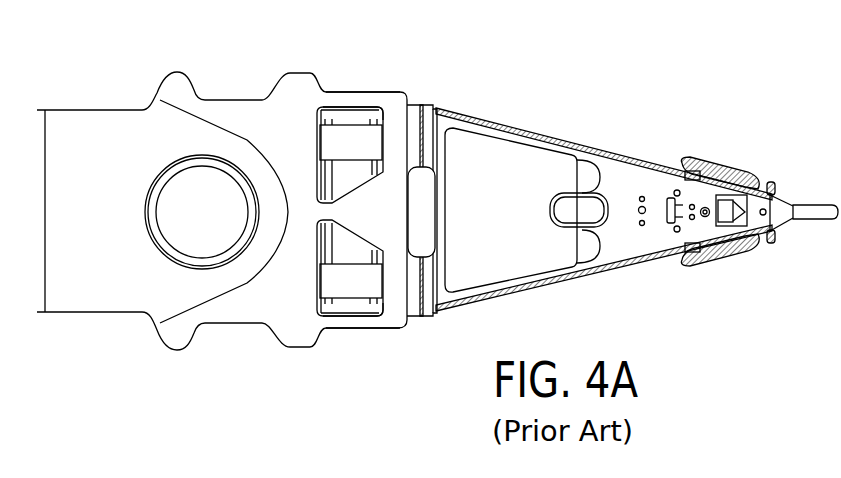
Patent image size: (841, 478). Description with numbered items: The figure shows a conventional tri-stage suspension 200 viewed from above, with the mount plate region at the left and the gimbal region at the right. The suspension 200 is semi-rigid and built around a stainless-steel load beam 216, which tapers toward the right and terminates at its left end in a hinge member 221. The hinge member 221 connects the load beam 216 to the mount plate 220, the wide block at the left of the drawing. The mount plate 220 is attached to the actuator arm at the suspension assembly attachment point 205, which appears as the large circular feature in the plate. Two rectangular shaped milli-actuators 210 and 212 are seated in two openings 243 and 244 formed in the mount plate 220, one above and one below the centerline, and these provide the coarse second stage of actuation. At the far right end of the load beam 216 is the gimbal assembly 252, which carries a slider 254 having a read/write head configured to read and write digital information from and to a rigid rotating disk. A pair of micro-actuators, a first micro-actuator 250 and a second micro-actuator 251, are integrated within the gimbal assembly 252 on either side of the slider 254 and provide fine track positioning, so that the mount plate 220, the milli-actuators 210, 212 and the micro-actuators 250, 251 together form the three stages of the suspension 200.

The tri-stage suspension 200 is at (637, 164).
The suspension assembly attachment point 205 is at (202, 212).
The milli-actuator 210 is at (348, 140).
The milli-actuator 212 is at (356, 284).
The load beam 216 is at (553, 133).
The mount plate 220 is at (246, 308).
The hinge member 221 is at (428, 298).
The opening 243 is at (334, 101).
The opening 244 is at (341, 309).
The first micro-actuator 250 is at (678, 187).
The second micro-actuator 251 is at (679, 233).
The gimbal assembly 252 is at (733, 263).
The slider 254 is at (728, 192).